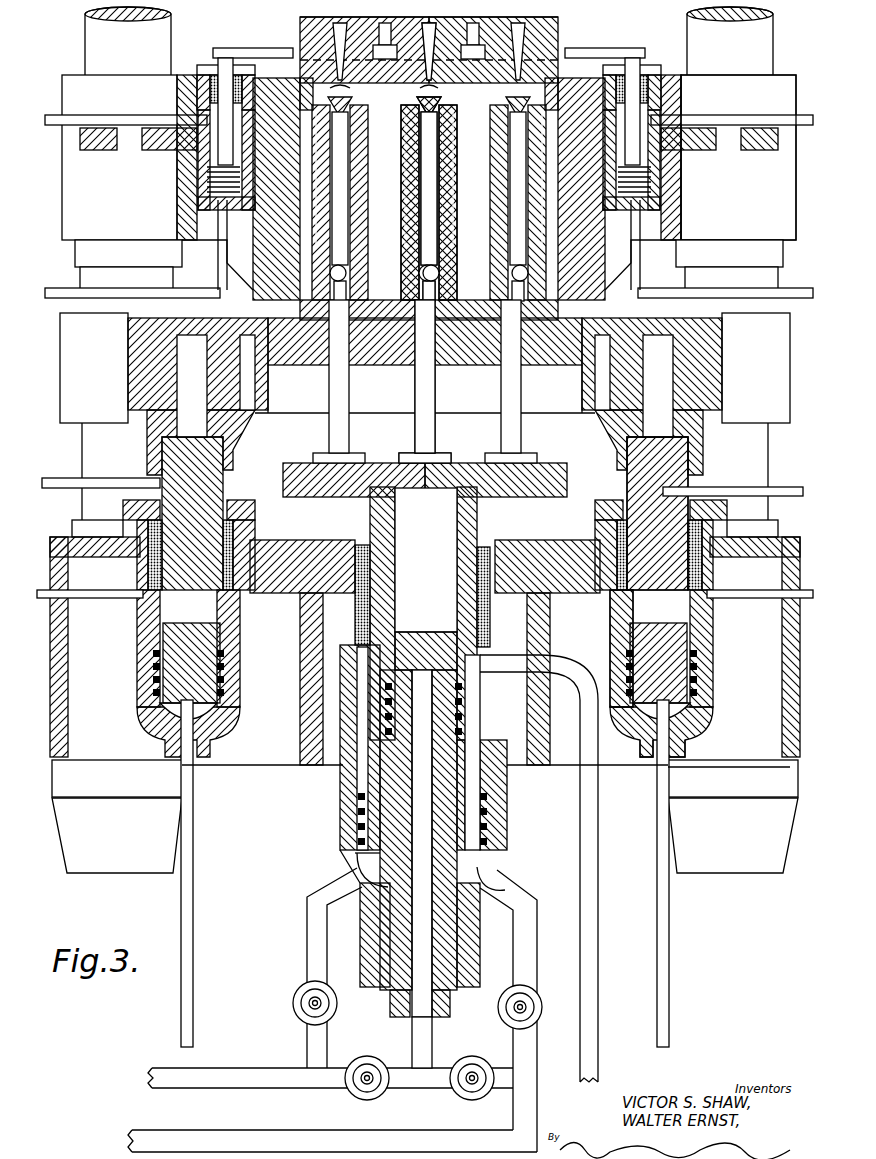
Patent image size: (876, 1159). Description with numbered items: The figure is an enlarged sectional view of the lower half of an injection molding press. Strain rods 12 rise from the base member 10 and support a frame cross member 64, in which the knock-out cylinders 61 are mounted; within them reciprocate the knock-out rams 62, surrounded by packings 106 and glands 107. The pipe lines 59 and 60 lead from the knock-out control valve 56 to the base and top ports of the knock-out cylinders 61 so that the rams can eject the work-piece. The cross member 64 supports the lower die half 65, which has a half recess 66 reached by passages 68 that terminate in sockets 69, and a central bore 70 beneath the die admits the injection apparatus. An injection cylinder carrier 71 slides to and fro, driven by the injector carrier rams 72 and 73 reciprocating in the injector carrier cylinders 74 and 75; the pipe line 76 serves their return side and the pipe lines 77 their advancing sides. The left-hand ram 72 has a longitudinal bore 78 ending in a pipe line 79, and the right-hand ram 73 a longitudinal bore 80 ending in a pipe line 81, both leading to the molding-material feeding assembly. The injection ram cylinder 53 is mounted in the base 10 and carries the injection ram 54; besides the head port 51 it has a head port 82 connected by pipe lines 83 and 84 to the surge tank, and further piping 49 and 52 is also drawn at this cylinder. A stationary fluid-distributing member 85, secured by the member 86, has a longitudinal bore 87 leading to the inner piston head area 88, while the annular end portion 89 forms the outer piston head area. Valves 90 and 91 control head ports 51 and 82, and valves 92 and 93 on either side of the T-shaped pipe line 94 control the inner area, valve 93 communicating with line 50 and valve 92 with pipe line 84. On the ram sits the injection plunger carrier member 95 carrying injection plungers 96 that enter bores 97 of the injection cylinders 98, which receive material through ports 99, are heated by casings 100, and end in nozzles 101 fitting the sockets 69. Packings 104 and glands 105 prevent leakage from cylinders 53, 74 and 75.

The base member 10 is at (263, 753).
The strain rods 12 is at (85, 33).
The fluid pipe 49 is at (593, 872).
The line 50 is at (420, 1138).
The head port 51 is at (490, 887).
The pipe 52 is at (500, 662).
The injection ram cylinder 53 is at (342, 779).
The injection ram 54 is at (358, 803).
The knock-out control valve 56 is at (733, 127).
The pipe line 59 is at (68, 116).
The pipe line 60 is at (143, 295).
The knock-out cylinders 61 is at (202, 155).
The knock-out rams 62 is at (225, 58).
The frame cross member 64 is at (177, 78).
The lower die half 65 is at (300, 35).
The half recess 66 is at (328, 18).
The passages 68 is at (532, 34).
The sockets 69 is at (350, 90).
The central bore 70 is at (560, 86).
The injection cylinder carrier 71 is at (72, 420).
The injector carrier ram 72 is at (188, 440).
The injector carrier ram 73 is at (652, 445).
The injector carrier cylinder 74 is at (137, 656).
The injector carrier cylinder 75 is at (707, 667).
The pipe line 76 is at (115, 598).
The pipe lines 77 is at (181, 902).
The longitudinal bore 78 is at (188, 626).
The pipe line 79 is at (115, 480).
The longitudinal bore 80 is at (687, 727).
The pipe line 81 is at (780, 488).
The head port 82 is at (357, 874).
The pipe line 83 is at (307, 931).
The pipe line 84 is at (252, 1068).
The fluid-distributing member 85 is at (455, 789).
The member 86 is at (373, 980).
The longitudinal bore 87 is at (488, 809).
The inner piston head area 88 is at (413, 668).
The annular end portion 89 is at (365, 857).
The valve 90 is at (538, 993).
The valve 91 is at (293, 991).
The valve 92 is at (349, 1093).
The valve 93 is at (477, 1058).
The T-shaped pipe line 94 is at (428, 1043).
The injection plunger carrier member 95 is at (548, 474).
The injection plungers 96 is at (333, 426).
The bores 97 is at (420, 190).
The injection cylinders 98 is at (452, 283).
The ports 99 is at (422, 260).
The casings 100 is at (398, 137).
The nozzle 101 is at (417, 107).
The packings 104 is at (148, 560).
The glands 105 is at (247, 500).
The packings 106 is at (212, 72).
The glands 107 is at (240, 58).